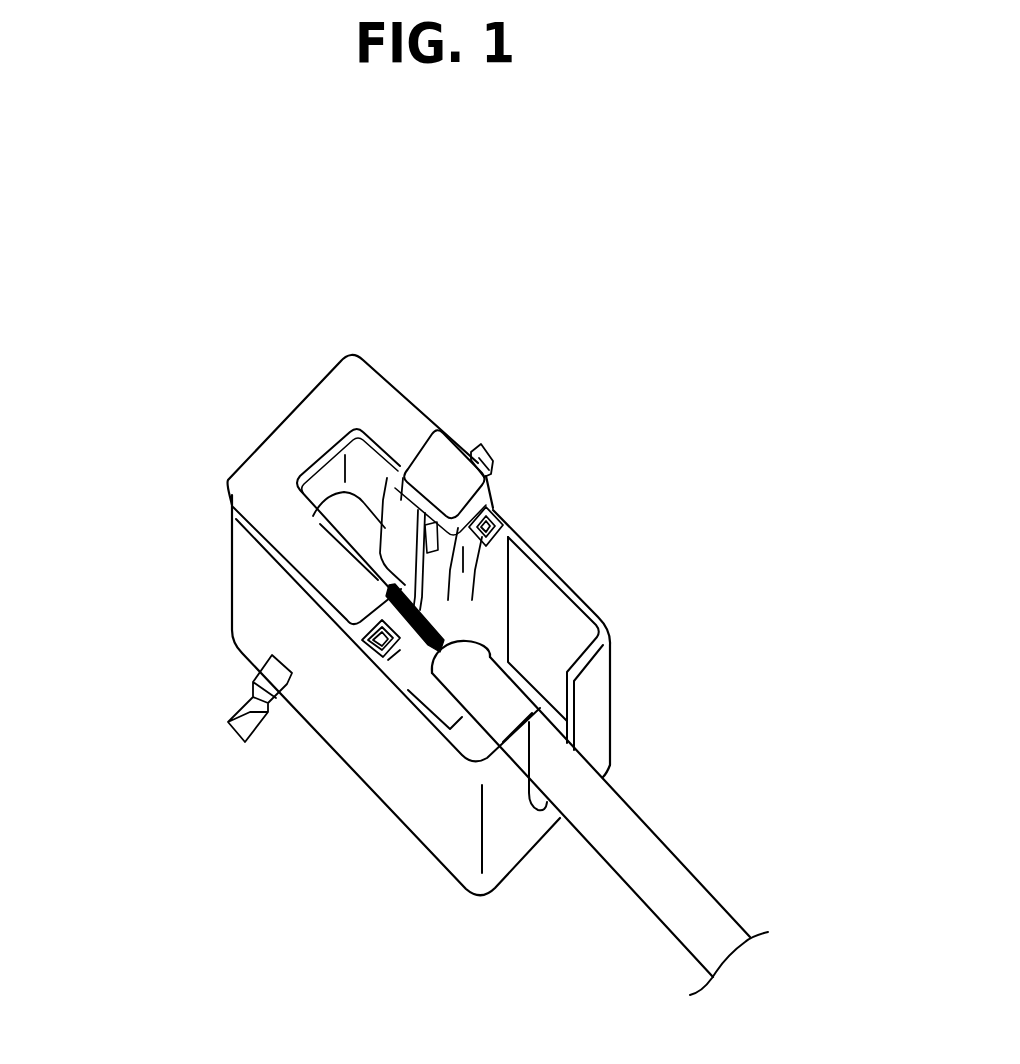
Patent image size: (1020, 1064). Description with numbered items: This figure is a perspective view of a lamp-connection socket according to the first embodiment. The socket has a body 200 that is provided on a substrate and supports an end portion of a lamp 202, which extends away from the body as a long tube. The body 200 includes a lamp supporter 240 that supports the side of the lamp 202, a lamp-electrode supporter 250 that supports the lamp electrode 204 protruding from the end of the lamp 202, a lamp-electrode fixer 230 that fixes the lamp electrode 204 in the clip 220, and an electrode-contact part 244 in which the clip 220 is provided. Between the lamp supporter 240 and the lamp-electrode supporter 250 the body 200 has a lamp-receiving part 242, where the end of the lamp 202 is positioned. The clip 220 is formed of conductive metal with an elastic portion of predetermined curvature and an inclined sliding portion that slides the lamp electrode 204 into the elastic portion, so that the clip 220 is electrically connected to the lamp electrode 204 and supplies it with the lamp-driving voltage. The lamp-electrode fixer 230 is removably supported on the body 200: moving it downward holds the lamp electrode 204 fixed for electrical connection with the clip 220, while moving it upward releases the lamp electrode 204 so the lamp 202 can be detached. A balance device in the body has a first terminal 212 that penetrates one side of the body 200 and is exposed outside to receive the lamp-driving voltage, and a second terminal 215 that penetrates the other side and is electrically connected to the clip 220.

The body 200 is at (234, 596).
The lamp 202 is at (646, 845).
The lamp electrode 204 is at (390, 660).
The first terminal 212 is at (250, 712).
The second terminal 215 is at (484, 453).
The clip 220 is at (401, 500).
The lamp-electrode fixer 230 is at (300, 418).
The lamp supporter 240 is at (570, 697).
The lamp-receiving part 242 is at (540, 629).
The electrode-contact part 244 is at (349, 452).
The lamp-electrode supporter 250 is at (492, 514).